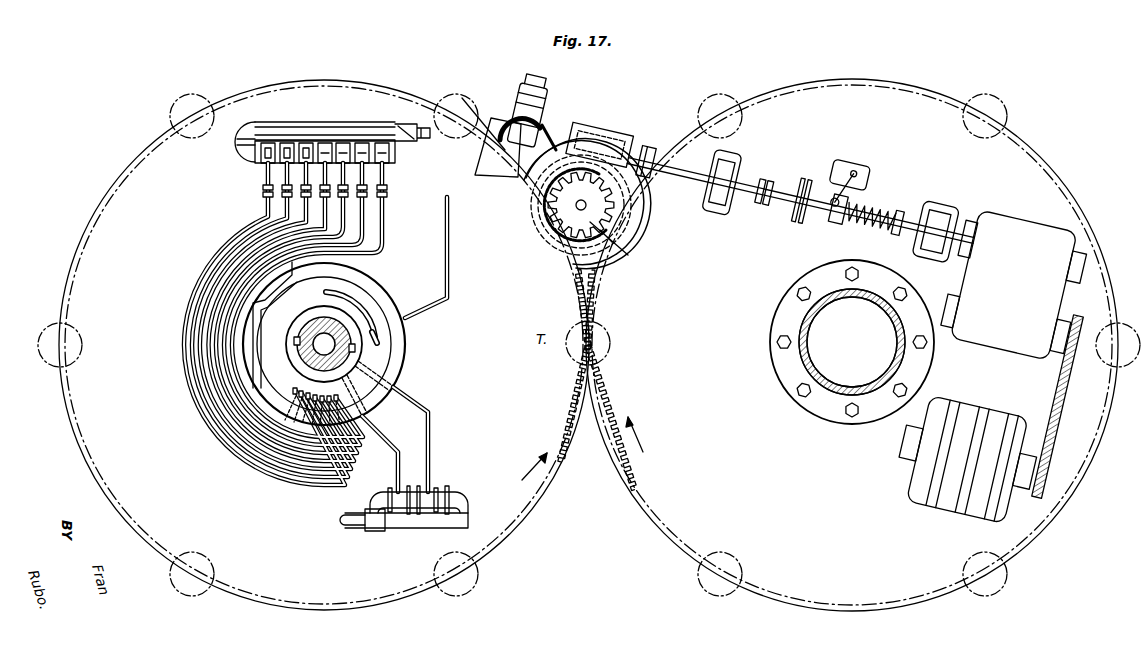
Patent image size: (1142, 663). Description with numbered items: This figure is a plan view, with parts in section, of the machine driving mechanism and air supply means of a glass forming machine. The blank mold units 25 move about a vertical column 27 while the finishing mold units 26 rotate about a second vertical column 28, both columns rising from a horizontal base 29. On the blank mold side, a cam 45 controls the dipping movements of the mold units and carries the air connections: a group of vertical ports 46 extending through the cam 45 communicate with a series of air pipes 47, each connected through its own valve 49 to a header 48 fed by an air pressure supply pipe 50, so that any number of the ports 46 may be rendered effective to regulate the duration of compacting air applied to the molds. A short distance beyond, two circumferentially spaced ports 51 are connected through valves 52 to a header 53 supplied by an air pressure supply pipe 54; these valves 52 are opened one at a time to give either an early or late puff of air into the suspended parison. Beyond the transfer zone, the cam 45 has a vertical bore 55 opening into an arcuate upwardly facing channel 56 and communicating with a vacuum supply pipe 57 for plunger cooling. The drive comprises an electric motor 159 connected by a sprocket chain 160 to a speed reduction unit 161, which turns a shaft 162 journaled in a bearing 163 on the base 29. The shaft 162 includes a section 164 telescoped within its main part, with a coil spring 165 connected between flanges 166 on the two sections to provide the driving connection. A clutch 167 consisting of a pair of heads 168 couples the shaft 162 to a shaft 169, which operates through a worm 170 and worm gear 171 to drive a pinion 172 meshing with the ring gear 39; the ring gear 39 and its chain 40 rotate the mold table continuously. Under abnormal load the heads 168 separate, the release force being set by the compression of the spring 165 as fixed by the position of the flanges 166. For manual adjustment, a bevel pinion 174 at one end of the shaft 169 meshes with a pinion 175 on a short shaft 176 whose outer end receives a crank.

The blank mold units 25 is at (46, 326).
The finishing mold units 26 is at (722, 94).
The vertical column 27 is at (352, 348).
The vertical column 28 is at (830, 395).
The horizontal base 29 is at (852, 345).
The ring gear 39 is at (560, 462).
The chain 40 is at (624, 474).
The cam 45 is at (396, 370).
The vertical ports 46 is at (308, 400).
The air pipes 47 is at (232, 410).
The header 48 is at (332, 130).
The valves 49 is at (290, 148).
The air pressure supply pipe 50 is at (360, 127).
The ports 51 is at (352, 402).
The valves 52 is at (406, 506).
The header 53 is at (415, 487).
The air pressure supply pipe 54 is at (352, 526).
The vertical bore 55 is at (380, 330).
The arcuate channel 56 is at (357, 300).
The vacuum supply pipe 57 is at (450, 276).
The electric motor 159 is at (959, 469).
The sprocket chain 160 is at (1036, 401).
The speed reduction unit 161 is at (1015, 285).
The shaft 162 is at (990, 221).
The bearing 163 is at (948, 217).
The shaft section 164 is at (820, 229).
The coil spring 165 is at (881, 203).
The flanges 166 is at (879, 235).
The clutch 167 is at (839, 177).
The clutch heads 168 is at (783, 213).
The shaft 169 is at (743, 183).
The worm 170 is at (617, 124).
The worm gear 171 is at (632, 225).
The pinion 172 is at (630, 245).
The bevel pinion 174 is at (540, 126).
The pinion 175 is at (530, 108).
The short shaft 176 is at (490, 112).